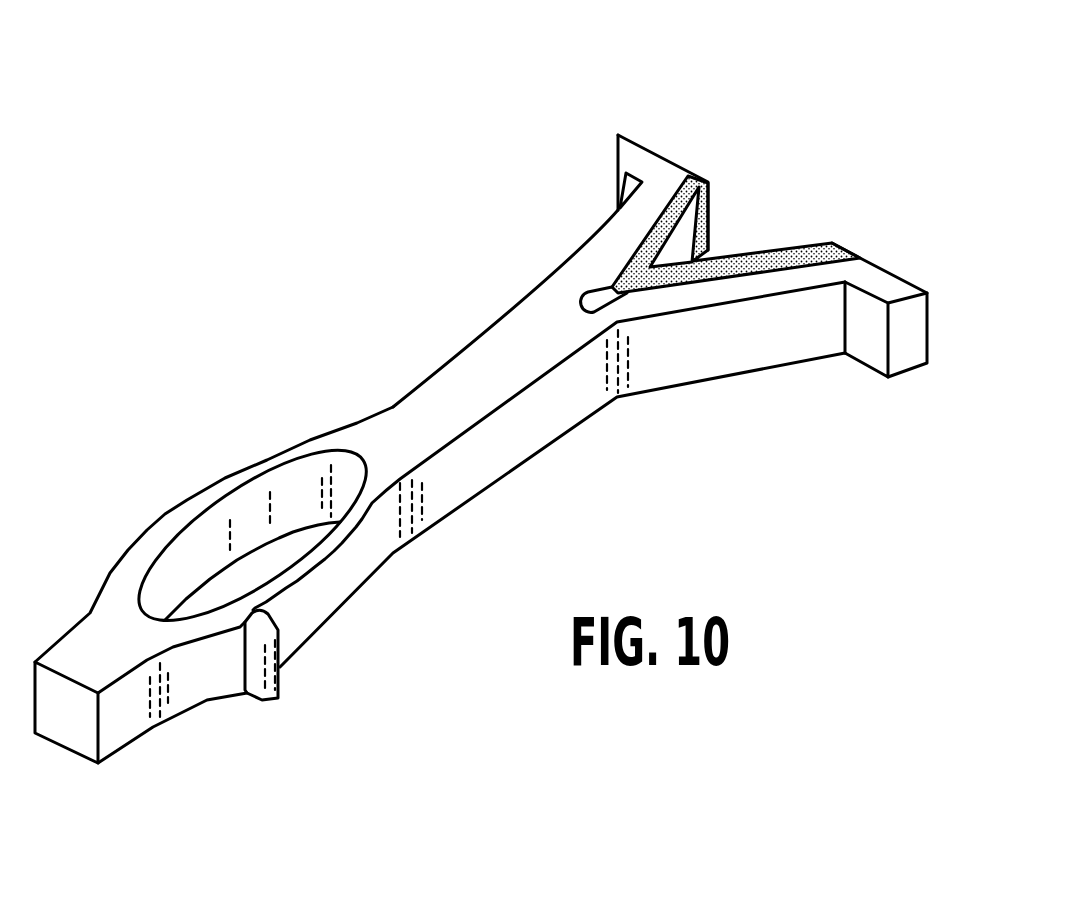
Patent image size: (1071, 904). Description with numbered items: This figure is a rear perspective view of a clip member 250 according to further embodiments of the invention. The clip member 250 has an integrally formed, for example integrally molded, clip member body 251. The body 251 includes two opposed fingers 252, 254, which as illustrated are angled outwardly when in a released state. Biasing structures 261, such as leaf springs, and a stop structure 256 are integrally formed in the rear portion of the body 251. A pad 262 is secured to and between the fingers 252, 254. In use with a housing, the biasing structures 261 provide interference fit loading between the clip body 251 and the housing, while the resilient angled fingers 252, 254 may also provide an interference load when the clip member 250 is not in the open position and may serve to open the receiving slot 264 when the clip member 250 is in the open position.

The clip member 250 is at (381, 140).
The clip member body 251 is at (400, 427).
The finger 252 is at (732, 350).
The finger 254 is at (612, 247).
The stop structure 256 is at (253, 673).
The biasing structures 261 is at (197, 503).
The pad 262 is at (805, 253).
The receiving slot 264 is at (787, 168).